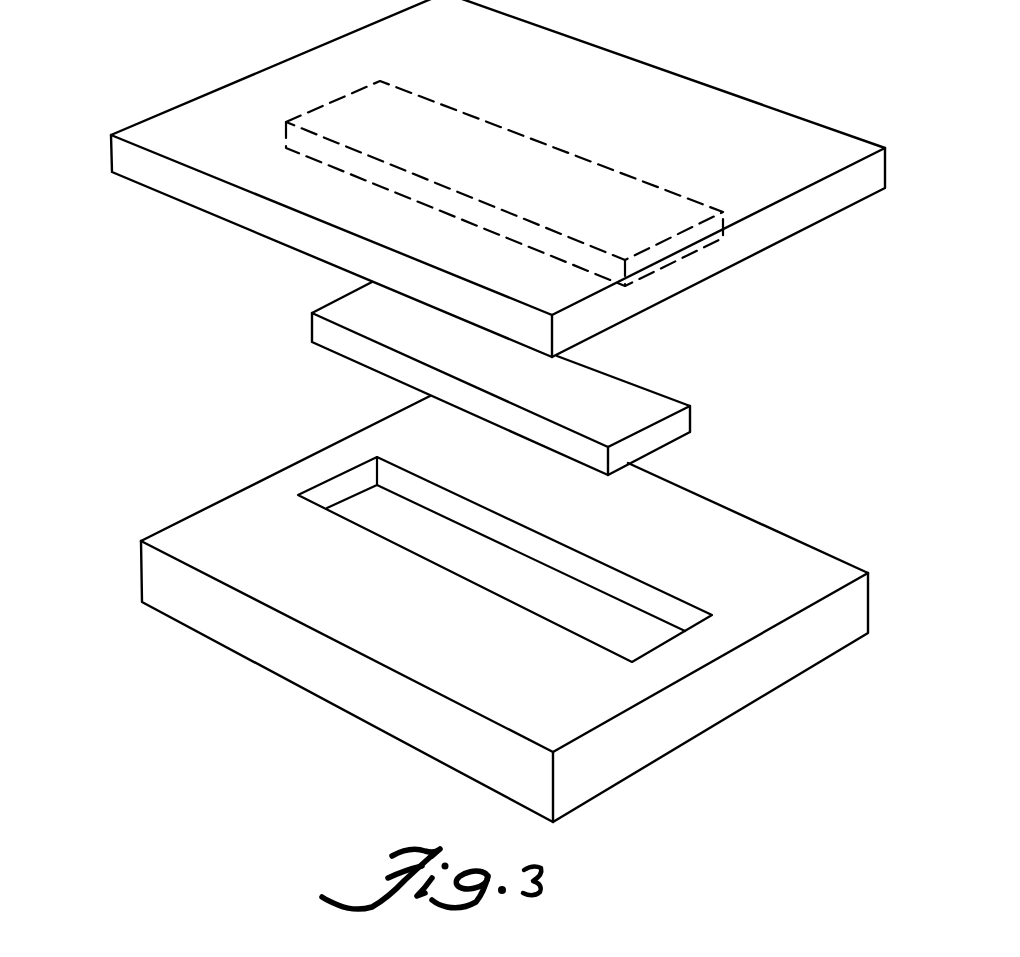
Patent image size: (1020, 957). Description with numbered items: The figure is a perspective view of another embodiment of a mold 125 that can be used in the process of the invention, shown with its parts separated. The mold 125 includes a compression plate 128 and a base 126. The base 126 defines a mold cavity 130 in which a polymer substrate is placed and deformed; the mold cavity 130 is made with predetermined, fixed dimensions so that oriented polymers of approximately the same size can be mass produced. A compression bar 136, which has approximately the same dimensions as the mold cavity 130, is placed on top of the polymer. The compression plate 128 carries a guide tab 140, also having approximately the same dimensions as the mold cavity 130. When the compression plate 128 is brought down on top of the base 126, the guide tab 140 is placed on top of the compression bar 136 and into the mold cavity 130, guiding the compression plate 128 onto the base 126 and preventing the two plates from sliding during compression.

The mold 125 is at (192, 296).
The base 126 is at (800, 562).
The compression plate 128 is at (705, 112).
The mold cavity 130 is at (612, 618).
The compression bar 136 is at (690, 412).
The guide tab 140 is at (683, 260).